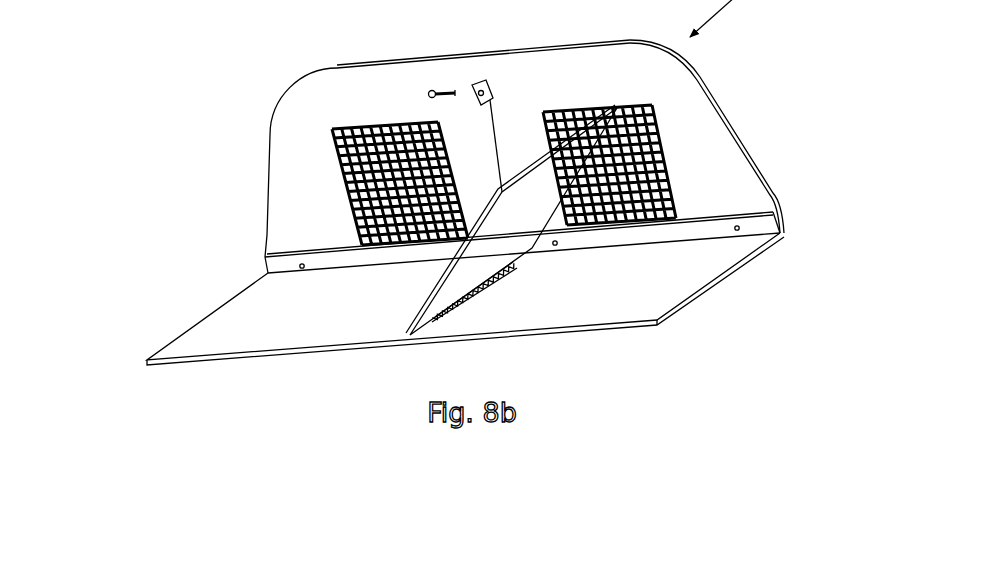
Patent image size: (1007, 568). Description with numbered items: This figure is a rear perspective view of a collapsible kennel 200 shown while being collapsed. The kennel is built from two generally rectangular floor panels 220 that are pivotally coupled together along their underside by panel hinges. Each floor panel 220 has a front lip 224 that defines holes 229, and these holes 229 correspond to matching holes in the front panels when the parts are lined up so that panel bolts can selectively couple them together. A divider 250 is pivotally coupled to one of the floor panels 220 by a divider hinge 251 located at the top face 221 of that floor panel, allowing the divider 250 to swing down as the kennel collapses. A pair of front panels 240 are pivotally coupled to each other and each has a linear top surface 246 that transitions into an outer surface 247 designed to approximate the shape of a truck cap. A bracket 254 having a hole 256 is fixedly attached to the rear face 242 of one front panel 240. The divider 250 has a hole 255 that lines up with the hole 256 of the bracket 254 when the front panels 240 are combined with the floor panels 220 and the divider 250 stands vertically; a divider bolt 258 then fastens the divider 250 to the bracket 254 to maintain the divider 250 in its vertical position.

The collapsible kennel 200 is at (697, 469).
The floor panel 220 is at (148, 341).
The top face 221 is at (277, 340).
The front lip 224 is at (765, 226).
The holes 229 is at (304, 270).
The front panel 240 is at (251, 95).
The rear face 242 is at (317, 83).
The linear top surface 246 is at (336, 66).
The outer surface 247 is at (263, 215).
The divider 250 is at (475, 263).
The divider hinge 251 is at (432, 320).
The bracket 254 is at (491, 89).
The hole 255 is at (654, 107).
The hole 256 is at (477, 83).
The divider bolt 258 is at (428, 90).